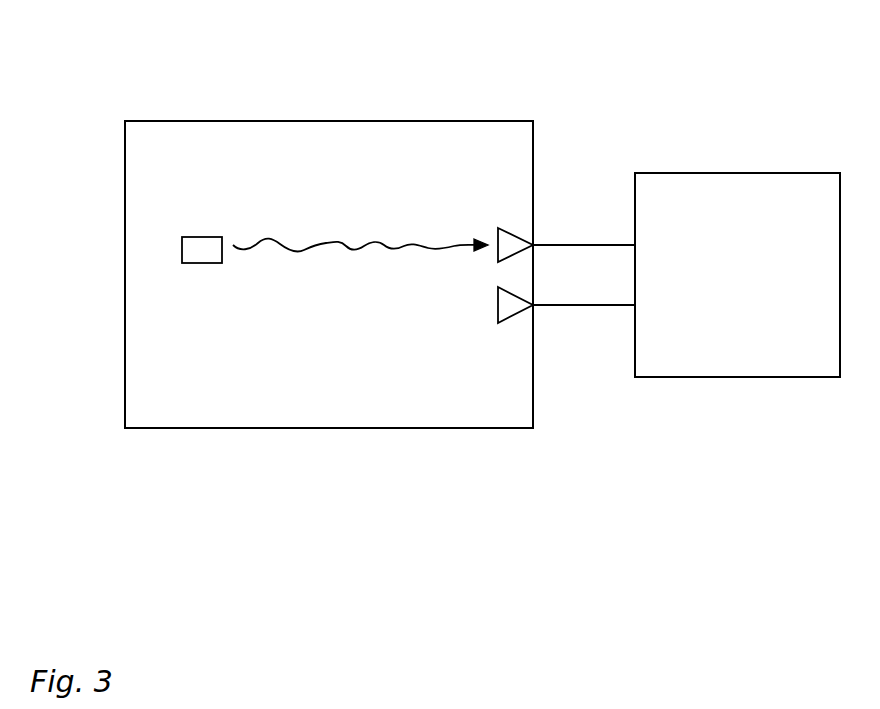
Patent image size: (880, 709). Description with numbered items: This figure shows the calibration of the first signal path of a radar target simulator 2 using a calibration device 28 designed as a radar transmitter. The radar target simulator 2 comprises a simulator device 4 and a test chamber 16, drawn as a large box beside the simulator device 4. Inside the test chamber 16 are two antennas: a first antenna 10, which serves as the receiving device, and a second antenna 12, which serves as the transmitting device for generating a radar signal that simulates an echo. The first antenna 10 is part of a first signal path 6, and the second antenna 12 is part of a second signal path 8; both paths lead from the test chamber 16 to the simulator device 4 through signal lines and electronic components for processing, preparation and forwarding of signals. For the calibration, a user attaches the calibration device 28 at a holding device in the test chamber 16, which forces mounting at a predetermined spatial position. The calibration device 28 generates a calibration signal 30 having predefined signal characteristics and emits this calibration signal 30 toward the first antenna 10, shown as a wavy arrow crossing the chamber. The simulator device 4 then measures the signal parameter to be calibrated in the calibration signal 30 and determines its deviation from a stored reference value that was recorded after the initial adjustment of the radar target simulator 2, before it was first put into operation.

The radar target simulator 2 is at (405, 518).
The simulator device 4 is at (790, 173).
The first signal path 6 is at (583, 210).
The second signal path 8 is at (600, 345).
The first antenna 10 is at (505, 228).
The second antenna 12 is at (519, 315).
The test chamber 16 is at (345, 121).
The calibration device 28 is at (198, 230).
The calibration signal 30 is at (341, 240).